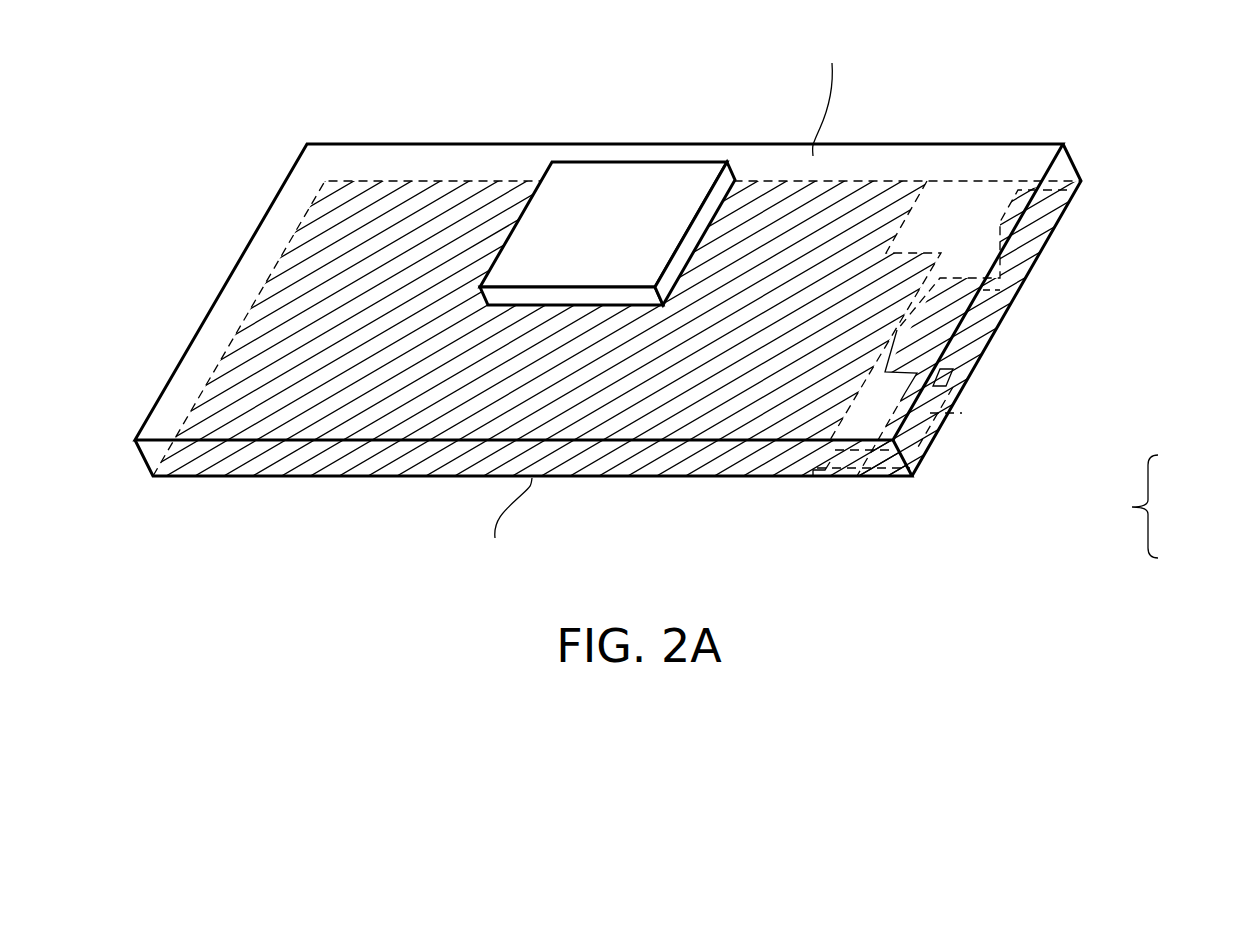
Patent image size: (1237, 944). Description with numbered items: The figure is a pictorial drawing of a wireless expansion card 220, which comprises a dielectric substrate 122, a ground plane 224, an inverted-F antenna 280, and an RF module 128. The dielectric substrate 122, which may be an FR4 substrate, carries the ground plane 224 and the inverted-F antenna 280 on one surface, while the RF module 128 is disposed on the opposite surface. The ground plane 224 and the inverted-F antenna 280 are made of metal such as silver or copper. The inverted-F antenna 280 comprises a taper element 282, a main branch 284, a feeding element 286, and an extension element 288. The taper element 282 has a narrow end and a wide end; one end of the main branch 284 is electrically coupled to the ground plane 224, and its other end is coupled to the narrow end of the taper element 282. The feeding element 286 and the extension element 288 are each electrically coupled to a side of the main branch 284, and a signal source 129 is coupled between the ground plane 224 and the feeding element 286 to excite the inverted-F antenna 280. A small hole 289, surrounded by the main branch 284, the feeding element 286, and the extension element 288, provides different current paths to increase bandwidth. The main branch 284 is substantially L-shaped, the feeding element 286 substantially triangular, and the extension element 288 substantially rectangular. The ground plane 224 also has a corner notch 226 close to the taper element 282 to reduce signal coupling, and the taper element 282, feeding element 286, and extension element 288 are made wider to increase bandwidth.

The wireless expansion card 220 is at (204, 90).
The dielectric substrate 122 is at (1073, 160).
The ground plane 224 is at (415, 217).
The corner notch 226 is at (960, 217).
The RF module 128 is at (573, 257).
The taper element 282 is at (1055, 228).
The main branch 284 is at (1005, 328).
The feeding element 286 is at (925, 420).
The extension element 288 is at (1015, 307).
The small hole 289 is at (982, 375).
The inverted-F antenna 280 is at (1142, 507).
The signal source 129 is at (844, 436).